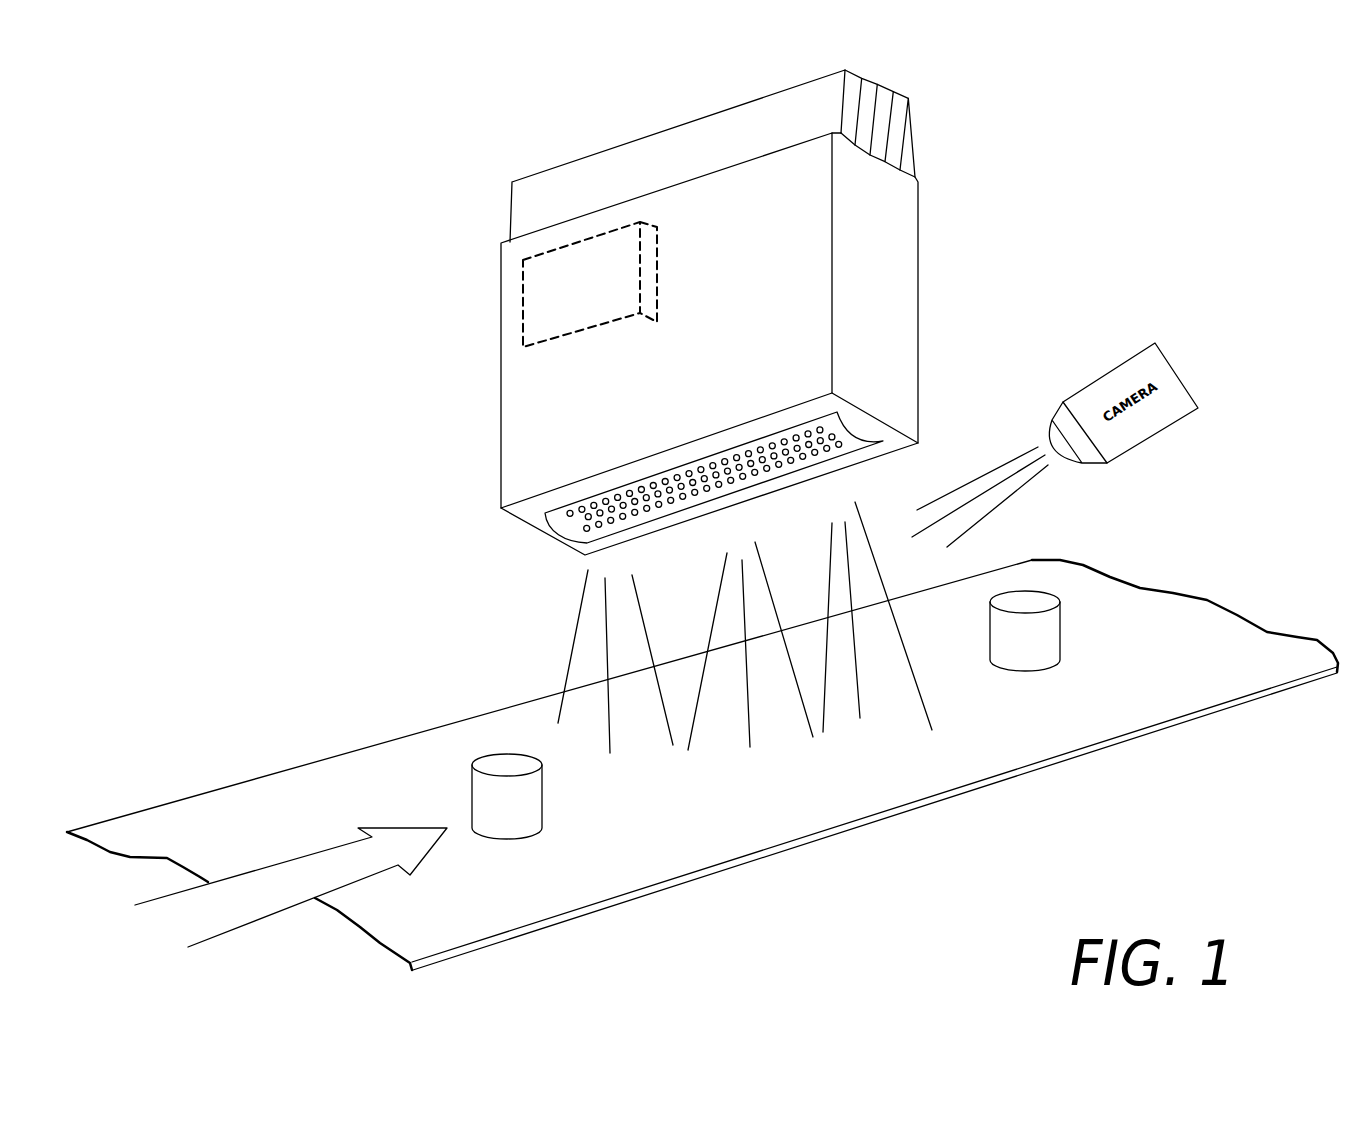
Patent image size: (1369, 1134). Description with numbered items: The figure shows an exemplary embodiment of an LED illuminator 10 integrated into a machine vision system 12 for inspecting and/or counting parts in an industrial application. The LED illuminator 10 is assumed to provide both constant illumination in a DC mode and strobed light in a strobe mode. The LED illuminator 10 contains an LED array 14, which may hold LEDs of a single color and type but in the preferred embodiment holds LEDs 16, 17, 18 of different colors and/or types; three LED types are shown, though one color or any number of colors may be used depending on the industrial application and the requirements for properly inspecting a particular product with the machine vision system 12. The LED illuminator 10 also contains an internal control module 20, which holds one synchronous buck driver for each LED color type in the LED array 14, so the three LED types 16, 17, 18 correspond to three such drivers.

The LED illuminator 10 is at (512, 270).
The machine vision system 12 is at (1002, 255).
The LED array 14 is at (915, 437).
The LED 16 is at (566, 514).
The LED 17 is at (585, 519).
The LED 18 is at (584, 530).
The internal control module 20 is at (556, 314).